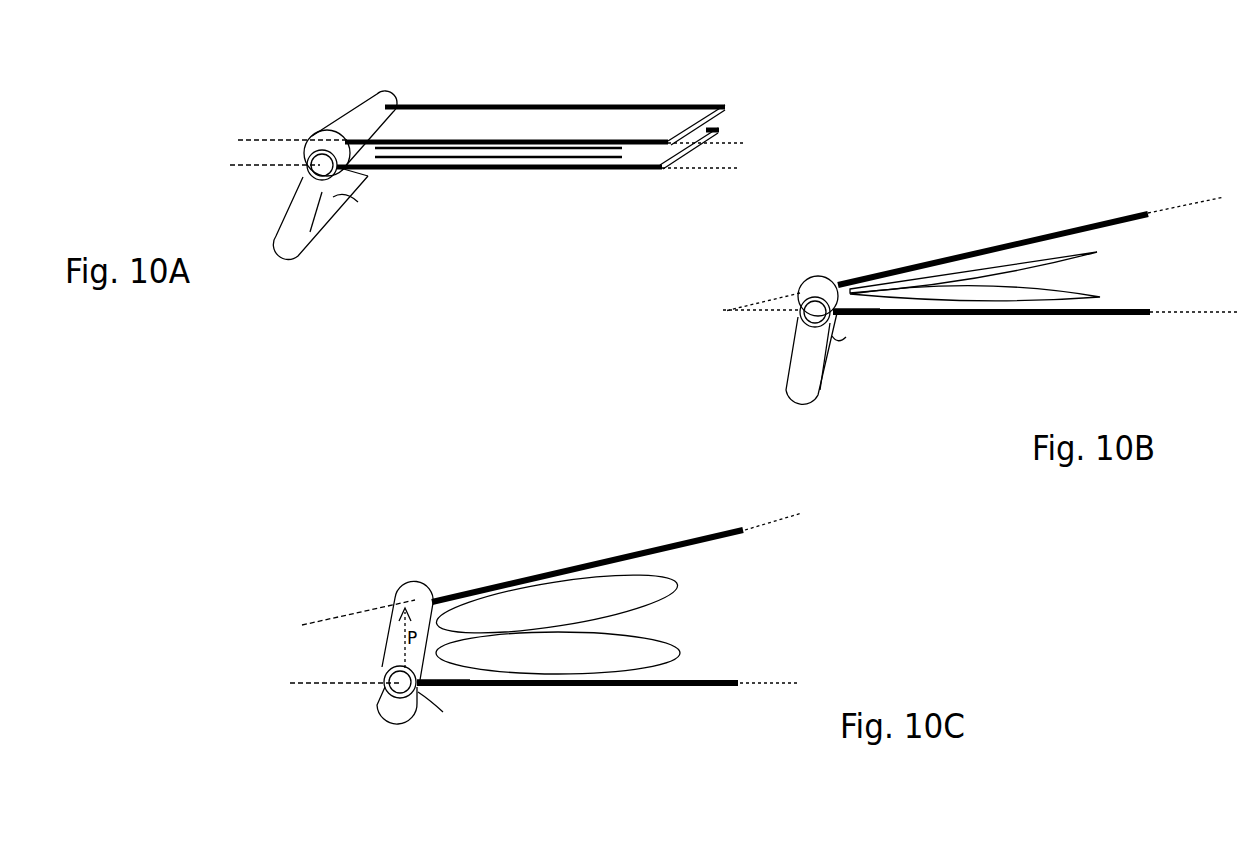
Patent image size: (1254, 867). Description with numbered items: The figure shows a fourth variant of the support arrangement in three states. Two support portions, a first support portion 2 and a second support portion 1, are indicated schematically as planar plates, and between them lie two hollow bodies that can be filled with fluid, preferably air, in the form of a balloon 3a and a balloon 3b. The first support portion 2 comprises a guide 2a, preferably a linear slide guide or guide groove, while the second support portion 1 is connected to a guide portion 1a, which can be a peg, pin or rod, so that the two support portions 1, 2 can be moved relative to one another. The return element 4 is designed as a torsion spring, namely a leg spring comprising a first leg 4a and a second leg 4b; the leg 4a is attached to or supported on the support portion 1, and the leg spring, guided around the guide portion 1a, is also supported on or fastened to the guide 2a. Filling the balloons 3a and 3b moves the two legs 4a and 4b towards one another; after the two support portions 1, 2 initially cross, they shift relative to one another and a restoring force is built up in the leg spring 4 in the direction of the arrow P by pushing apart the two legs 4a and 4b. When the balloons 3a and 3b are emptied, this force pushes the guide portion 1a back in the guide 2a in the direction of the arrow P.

In FIG. 10A, the second support portion 1 is at (478, 172).
In FIG. 10B, the second support portion 1 is at (1067, 316).
In FIG. 10C, the second support portion 1 is at (628, 687).
In FIG. 10A, the guide portion 1a is at (333, 167).
In FIG. 10B, the guide portion 1a is at (832, 337).
In FIG. 10C, the guide portion 1a is at (418, 697).
In FIG. 10A, the first support portion 2 is at (487, 118).
In FIG. 10B, the first support portion 2 is at (967, 253).
In FIG. 10C, the first support portion 2 is at (623, 553).
In FIG. 10A, the guide 2a is at (312, 138).
In FIG. 10B, the guide 2a is at (782, 380).
In FIG. 10C, the guide 2a is at (392, 628).
In FIG. 10A, the balloon 3a is at (560, 140).
In FIG. 10B, the balloon 3a is at (1095, 256).
In FIG. 10C, the balloon 3a is at (678, 585).
In FIG. 10A, the balloon 3b is at (522, 158).
In FIG. 10B, the balloon 3b is at (1100, 297).
In FIG. 10C, the balloon 3b is at (681, 653).
In FIG. 10A, the return element 4 is at (305, 153).
In FIG. 10B, the return element 4 is at (820, 278).
In FIG. 10C, the return element 4 is at (387, 675).
In FIG. 10A, the first leg 4a is at (378, 172).
In FIG. 10B, the first leg 4a is at (877, 316).
In FIG. 10C, the first leg 4a is at (463, 687).
In FIG. 10A, the second leg 4b is at (349, 200).
In FIG. 10B, the second leg 4b is at (836, 338).
In FIG. 10C, the second leg 4b is at (443, 712).